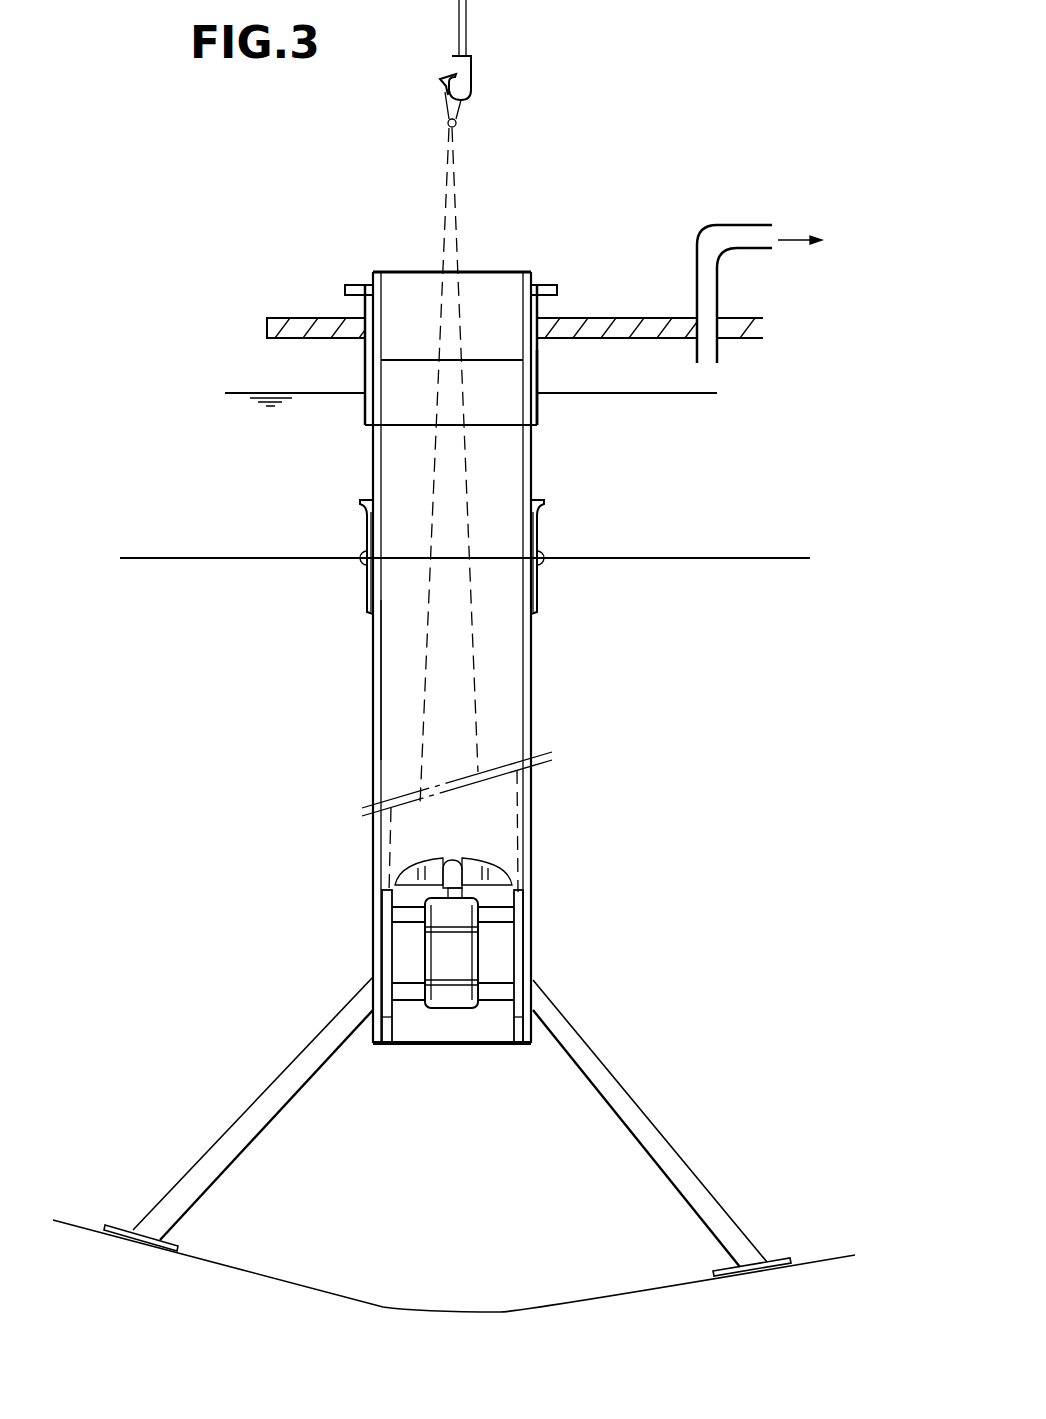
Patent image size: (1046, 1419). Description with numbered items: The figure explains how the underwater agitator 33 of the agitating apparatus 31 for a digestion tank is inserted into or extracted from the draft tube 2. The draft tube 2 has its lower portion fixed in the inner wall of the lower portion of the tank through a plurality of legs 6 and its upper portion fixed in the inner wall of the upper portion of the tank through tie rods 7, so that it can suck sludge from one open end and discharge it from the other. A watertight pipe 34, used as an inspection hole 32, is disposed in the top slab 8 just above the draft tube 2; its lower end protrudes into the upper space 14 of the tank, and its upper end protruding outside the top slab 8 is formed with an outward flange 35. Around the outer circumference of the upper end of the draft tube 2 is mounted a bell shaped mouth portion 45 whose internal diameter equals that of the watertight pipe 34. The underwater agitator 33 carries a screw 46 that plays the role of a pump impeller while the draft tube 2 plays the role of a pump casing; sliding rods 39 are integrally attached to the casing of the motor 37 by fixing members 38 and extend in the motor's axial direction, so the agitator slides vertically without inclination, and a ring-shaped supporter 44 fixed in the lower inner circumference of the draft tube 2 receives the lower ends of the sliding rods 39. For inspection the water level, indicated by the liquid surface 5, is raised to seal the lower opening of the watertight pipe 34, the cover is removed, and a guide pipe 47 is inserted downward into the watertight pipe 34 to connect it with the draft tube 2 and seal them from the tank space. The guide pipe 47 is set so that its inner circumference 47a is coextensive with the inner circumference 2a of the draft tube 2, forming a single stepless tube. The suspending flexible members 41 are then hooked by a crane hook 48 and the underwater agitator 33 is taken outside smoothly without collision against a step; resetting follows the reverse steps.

The crane hook 48 is at (468, 68).
The inspection hole 32 is at (404, 248).
The outward flange 35 is at (557, 291).
The top slab 8 is at (637, 318).
The sludge liquid level 5 is at (238, 393).
The upper space 14 is at (320, 380).
The watertight pipe 34 is at (537, 410).
The guide pipe 47 is at (527, 477).
The inner circumference of guide pipe 47a is at (377, 460).
The tie rods 7 is at (214, 558).
The bell shaped mouth portion 45 is at (538, 540).
The draft tube 2 is at (373, 682).
The inner circumference of draft tube 2a is at (386, 636).
The suspending flexible members 41 is at (425, 712).
The underwater agitator 33 is at (462, 848).
The screw 46 is at (500, 865).
The agitating apparatus 31 is at (348, 866).
The fixing members 38 is at (386, 900).
The sliding rods 39 is at (400, 937).
The motor 37 is at (432, 963).
The ring-shaped supporter 44 is at (516, 1030).
The legs 6 is at (207, 1162).